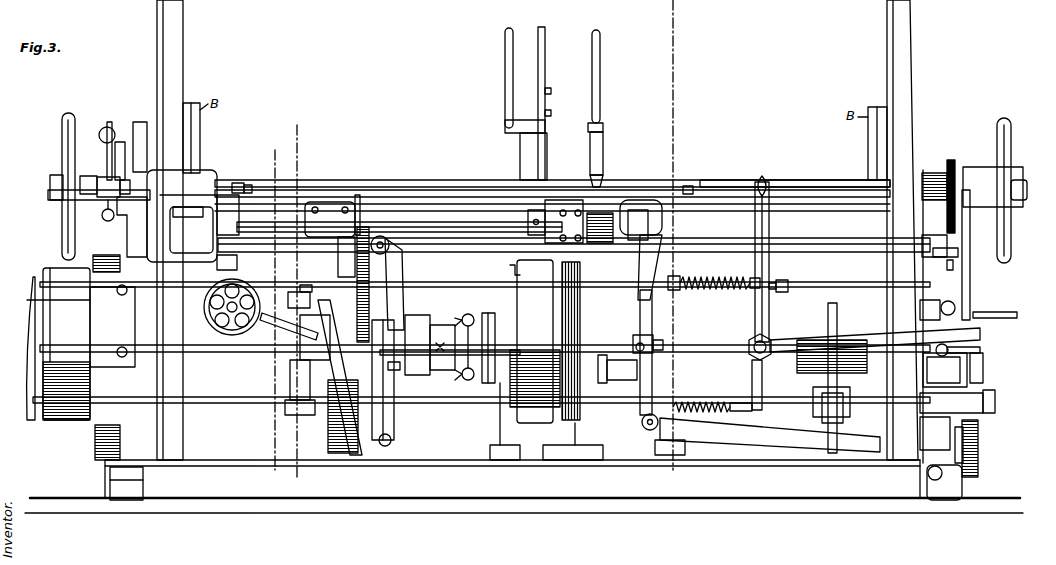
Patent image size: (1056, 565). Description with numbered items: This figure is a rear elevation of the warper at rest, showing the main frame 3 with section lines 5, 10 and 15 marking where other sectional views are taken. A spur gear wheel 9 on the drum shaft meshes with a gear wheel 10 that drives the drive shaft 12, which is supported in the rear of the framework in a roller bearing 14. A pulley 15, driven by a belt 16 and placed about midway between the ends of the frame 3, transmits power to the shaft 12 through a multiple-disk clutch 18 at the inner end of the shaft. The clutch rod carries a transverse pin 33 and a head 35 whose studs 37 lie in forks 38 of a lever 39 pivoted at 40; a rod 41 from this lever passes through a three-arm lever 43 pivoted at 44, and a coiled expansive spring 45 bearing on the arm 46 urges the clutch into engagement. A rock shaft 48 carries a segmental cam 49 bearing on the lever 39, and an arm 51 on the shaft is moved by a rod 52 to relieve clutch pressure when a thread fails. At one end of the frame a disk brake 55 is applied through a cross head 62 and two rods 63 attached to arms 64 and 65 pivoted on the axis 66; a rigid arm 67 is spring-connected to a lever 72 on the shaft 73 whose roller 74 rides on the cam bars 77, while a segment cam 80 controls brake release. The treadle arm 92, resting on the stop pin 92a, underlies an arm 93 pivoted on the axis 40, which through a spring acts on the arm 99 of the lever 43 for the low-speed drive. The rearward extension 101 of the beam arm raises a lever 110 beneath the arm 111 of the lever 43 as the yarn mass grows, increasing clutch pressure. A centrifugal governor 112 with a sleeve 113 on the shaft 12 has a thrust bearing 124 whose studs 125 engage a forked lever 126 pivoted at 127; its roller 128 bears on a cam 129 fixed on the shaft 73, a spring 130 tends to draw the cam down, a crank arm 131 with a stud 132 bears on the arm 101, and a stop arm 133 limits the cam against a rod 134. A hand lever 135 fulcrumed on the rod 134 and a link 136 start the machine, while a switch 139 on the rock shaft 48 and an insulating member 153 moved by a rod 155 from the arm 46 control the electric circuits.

The main frame 3 is at (157, 52).
The section line 5— 5 is at (283, 133).
The spur gear wheel 9 is at (96, 460).
The gear wheel 10 is at (292, 163).
The drive shaft 12 is at (248, 350).
The roller bearing 14 is at (492, 313).
The pulley 15 is at (668, 468).
The belt 16 is at (552, 300).
The clutch 18 is at (580, 300).
The transverse pin 33 is at (617, 370).
The head 35 is at (636, 338).
The studs 37 is at (655, 345).
The forks 38 is at (640, 418).
The lever 39 is at (657, 383).
The pivot 40 is at (650, 430).
The rod 41 is at (788, 287).
The three-arm lever 43 is at (751, 340).
The pivot 44 is at (770, 340).
The coiled expansive spring 45 is at (718, 280).
The arm 46 is at (772, 223).
The rock shaft 48 is at (428, 227).
The segmental cam 49 is at (643, 266).
The arm 51 is at (604, 182).
The rod 52 is at (600, 77).
The brake 55 is at (52, 270).
The cross head 62 is at (33, 322).
The rods 63 is at (140, 282).
The arm 64 is at (300, 300).
The arm 65 is at (298, 415).
The axis 66 is at (312, 350).
The arm 67 is at (315, 333).
The lever 72 is at (128, 234).
The shaft 73 is at (462, 250).
The roller 74 is at (103, 180).
The bars 77 is at (104, 132).
The segment cam 80 is at (352, 262).
The arm 92 is at (928, 475).
The stop pin 92a is at (946, 482).
The arm 93 is at (790, 447).
The arm 99 is at (752, 377).
The rearward extension 101 is at (952, 268).
The lever 110 is at (966, 357).
The arm 111 is at (840, 320).
The centrifugal governor 112 is at (466, 314).
The sleeve 113 is at (400, 330).
The thrust bearing 124 is at (400, 318).
The studs 125 is at (398, 370).
The forked lever 126 is at (395, 416).
The pivot 127 is at (392, 440).
The roller 128 is at (392, 240).
The cam 129 is at (378, 236).
The coiled contractile spring 130 is at (363, 305).
The crank arm 131 is at (935, 240).
The stud 132 is at (958, 252).
The stop arm 133 is at (357, 195).
The rod 134 is at (793, 185).
The hand lever 135 is at (545, 62).
The link 136 is at (507, 75).
The switch 139 is at (163, 182).
The insulating member 153 is at (236, 183).
The rod 155 is at (688, 187).